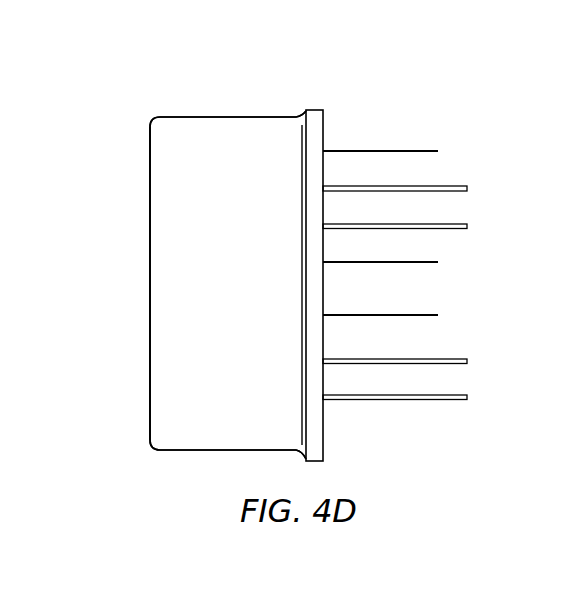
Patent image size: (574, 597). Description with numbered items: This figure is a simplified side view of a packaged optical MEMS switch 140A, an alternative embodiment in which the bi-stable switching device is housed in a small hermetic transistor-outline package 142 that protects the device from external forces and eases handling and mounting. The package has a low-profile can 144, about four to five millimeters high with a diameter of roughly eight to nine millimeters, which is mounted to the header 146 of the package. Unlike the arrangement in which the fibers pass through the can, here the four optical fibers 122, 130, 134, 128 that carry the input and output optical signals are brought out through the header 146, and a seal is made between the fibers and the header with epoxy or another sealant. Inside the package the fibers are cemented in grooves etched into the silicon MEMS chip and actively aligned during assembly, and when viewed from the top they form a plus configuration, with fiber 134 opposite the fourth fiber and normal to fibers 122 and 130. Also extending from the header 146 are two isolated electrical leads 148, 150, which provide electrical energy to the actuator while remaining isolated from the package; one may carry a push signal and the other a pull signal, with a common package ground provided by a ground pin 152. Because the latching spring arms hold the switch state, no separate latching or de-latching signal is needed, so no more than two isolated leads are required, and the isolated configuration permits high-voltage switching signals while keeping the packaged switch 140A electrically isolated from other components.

The packaged optical MEMS switch 140A is at (138, 90).
The TO-5 package 142 is at (148, 363).
The can 144 is at (157, 280).
The header 146 is at (313, 108).
The isolated electrical lead 148 is at (415, 149).
The optical fiber 122 is at (415, 186).
The optical fiber 130 is at (415, 230).
The ground pin 152 is at (350, 263).
The isolated electrical lead 150 is at (415, 314).
The optical fiber 134 is at (415, 358).
The optical fiber 128 is at (415, 400).